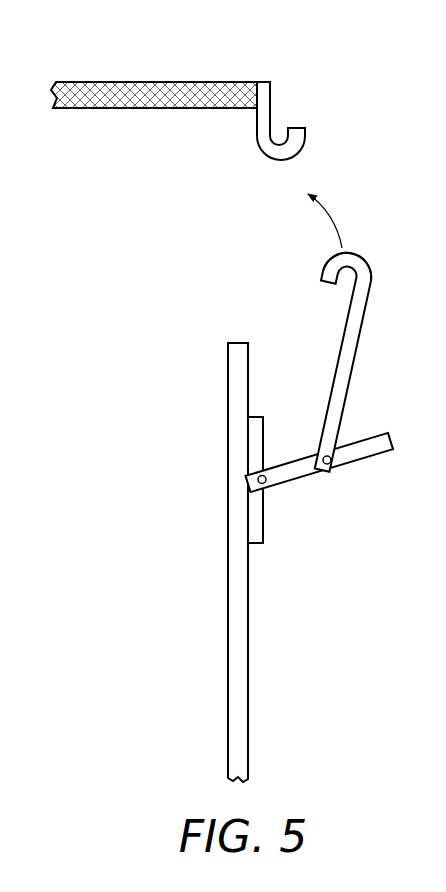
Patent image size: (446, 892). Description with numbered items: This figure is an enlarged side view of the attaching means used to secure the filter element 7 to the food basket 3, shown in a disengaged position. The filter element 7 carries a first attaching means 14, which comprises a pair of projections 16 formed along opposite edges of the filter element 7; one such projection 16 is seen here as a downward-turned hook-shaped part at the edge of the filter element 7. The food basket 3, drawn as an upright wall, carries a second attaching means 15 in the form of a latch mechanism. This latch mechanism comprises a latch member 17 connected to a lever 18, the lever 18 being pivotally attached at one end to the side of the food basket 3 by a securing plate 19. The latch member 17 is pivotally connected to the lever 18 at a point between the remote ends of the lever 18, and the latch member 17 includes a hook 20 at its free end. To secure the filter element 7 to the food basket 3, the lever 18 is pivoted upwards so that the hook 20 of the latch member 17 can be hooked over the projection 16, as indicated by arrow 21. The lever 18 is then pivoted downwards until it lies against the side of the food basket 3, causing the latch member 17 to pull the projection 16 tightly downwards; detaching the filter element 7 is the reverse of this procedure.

The food basket 3 is at (248, 685).
The filter element 7 is at (100, 82).
The first attaching means 14 is at (288, 88).
The second attaching means 15 is at (301, 401).
The projection 16 is at (273, 88).
The latch member 17 is at (368, 318).
The lever 18 is at (373, 447).
The securing plate 19 is at (255, 440).
The hook 20 is at (365, 261).
The arrow 21 is at (335, 207).